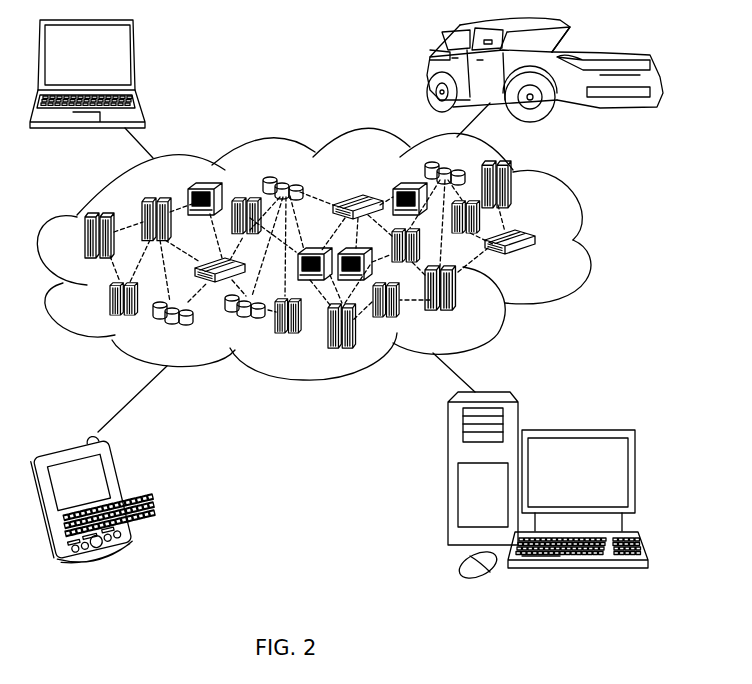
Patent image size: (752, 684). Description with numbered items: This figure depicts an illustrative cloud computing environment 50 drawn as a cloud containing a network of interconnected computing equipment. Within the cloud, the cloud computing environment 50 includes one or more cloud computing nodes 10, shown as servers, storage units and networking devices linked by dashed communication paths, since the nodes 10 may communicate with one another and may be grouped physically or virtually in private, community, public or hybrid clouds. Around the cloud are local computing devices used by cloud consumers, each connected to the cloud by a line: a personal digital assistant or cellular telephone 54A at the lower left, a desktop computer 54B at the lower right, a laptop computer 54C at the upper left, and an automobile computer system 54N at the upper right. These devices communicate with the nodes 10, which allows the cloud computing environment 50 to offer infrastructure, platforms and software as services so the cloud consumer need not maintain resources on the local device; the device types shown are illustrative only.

The laptop computer 54C is at (135, 62).
The automobile computer system 54N is at (430, 69).
The personal digital assistant or cellular telephone 54A is at (127, 494).
The desktop computer 54B is at (577, 430).
The cloud computing environment 50 is at (575, 240).
The cloud computing node 10 is at (538, 260).